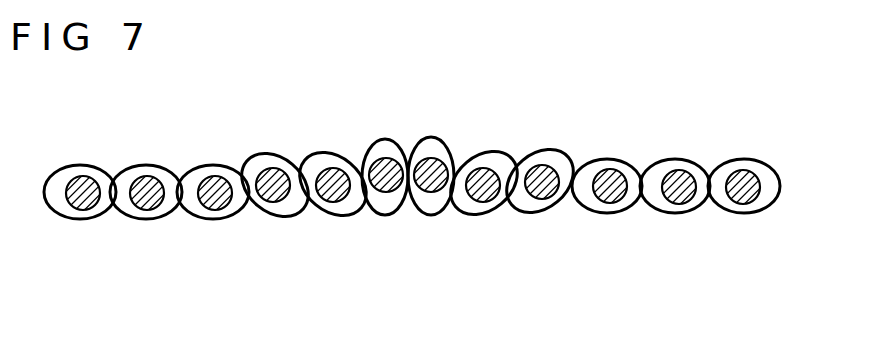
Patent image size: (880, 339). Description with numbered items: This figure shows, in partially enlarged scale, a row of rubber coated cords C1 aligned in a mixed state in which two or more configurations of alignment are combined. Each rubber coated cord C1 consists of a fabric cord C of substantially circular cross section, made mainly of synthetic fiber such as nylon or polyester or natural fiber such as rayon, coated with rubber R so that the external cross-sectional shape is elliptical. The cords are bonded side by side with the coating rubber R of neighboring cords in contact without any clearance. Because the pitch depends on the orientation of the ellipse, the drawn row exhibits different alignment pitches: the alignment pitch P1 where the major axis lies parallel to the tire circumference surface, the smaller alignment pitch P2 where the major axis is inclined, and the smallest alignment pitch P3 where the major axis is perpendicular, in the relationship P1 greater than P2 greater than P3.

The rubber coated cord C1 is at (607, 150).
The fabric cord C is at (603, 201).
The rubber R is at (663, 201).
The alignment pitch P1 is at (215, 193).
The alignment pitch P2 is at (334, 185).
The alignment pitch P3 is at (431, 175).